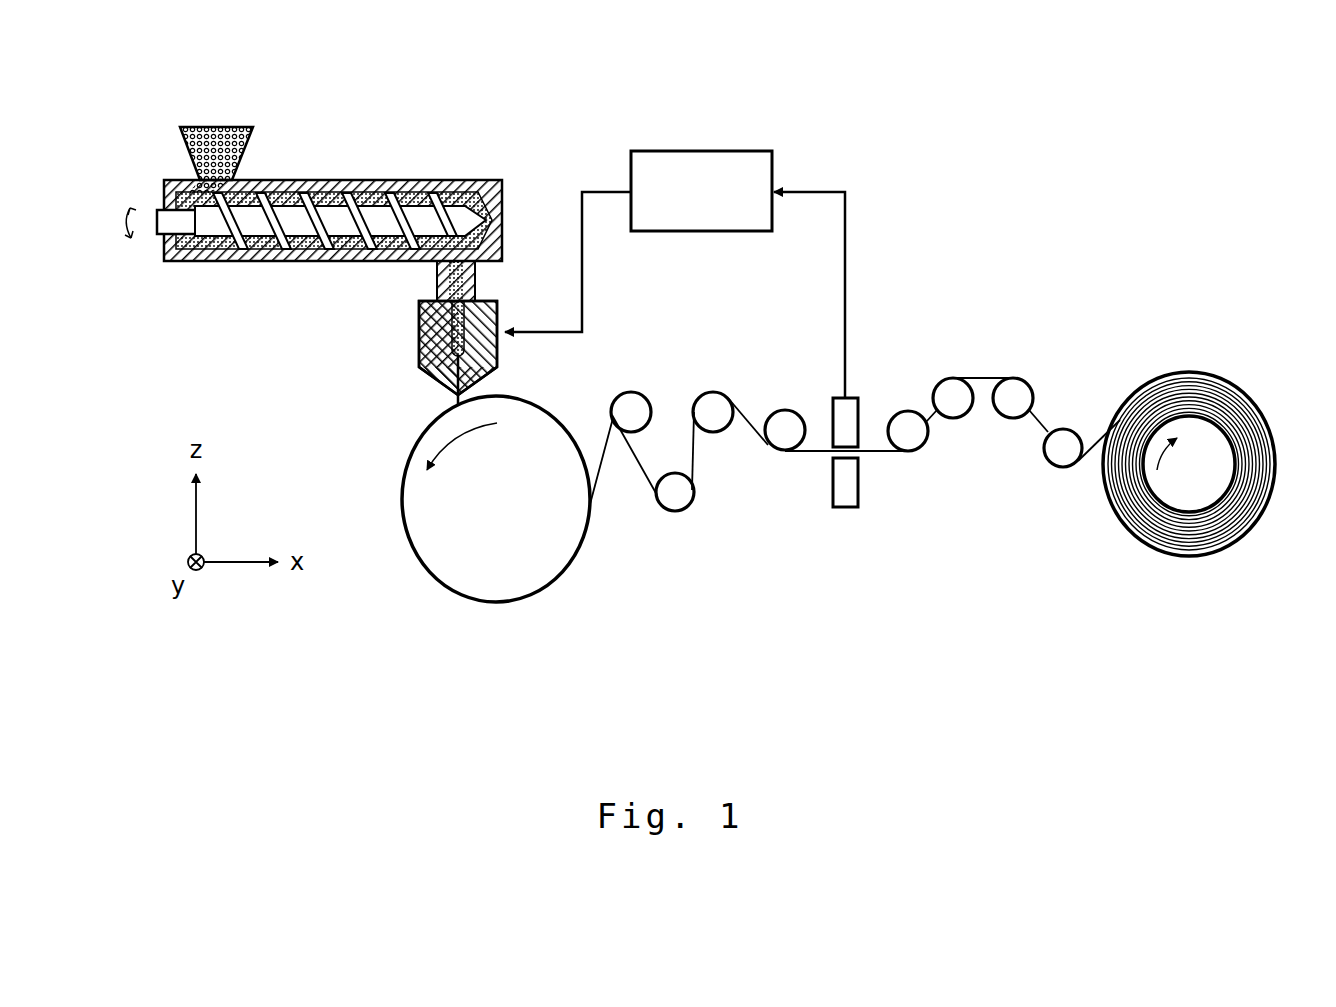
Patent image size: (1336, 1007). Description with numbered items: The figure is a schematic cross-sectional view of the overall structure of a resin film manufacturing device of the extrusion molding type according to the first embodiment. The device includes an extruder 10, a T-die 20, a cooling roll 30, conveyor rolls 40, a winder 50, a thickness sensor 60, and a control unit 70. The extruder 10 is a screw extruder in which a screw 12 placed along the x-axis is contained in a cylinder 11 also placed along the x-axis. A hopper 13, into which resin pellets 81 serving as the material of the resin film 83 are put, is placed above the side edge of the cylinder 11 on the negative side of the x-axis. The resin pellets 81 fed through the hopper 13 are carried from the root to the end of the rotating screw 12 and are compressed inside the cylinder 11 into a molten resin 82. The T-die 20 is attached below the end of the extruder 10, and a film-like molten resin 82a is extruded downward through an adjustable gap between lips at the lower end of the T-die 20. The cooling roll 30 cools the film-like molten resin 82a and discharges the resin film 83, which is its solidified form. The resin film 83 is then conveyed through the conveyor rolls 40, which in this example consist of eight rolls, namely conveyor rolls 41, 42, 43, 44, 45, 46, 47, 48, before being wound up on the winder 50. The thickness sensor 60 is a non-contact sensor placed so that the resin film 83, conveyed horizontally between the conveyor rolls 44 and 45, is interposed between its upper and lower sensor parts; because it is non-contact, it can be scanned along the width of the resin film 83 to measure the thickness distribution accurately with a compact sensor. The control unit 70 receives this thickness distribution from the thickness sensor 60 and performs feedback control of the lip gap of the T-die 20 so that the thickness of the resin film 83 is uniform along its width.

The extruder 10 is at (378, 128).
The cylinder 11 is at (337, 180).
The screw 12 is at (418, 206).
The hopper 13 is at (255, 130).
The T-die 20 is at (419, 334).
The cooling roll 30 is at (403, 516).
The conveyor rolls 40 is at (608, 572).
The conveyor roll 41 is at (632, 432).
The conveyor roll 42 is at (675, 511).
The conveyor roll 43 is at (717, 432).
The conveyor roll 44 is at (785, 450).
The conveyor roll 45 is at (909, 451).
The conveyor roll 46 is at (954, 418).
The conveyor roll 47 is at (1014, 418).
The conveyor roll 48 is at (1064, 468).
The winder 50 is at (1186, 420).
The thickness sensor 60 is at (852, 396).
The control unit 70 is at (727, 151).
The resin pellets 81 is at (207, 130).
The molten resin 82 is at (437, 285).
The film-like molten resin 82a is at (457, 402).
The resin film 83 is at (603, 428).